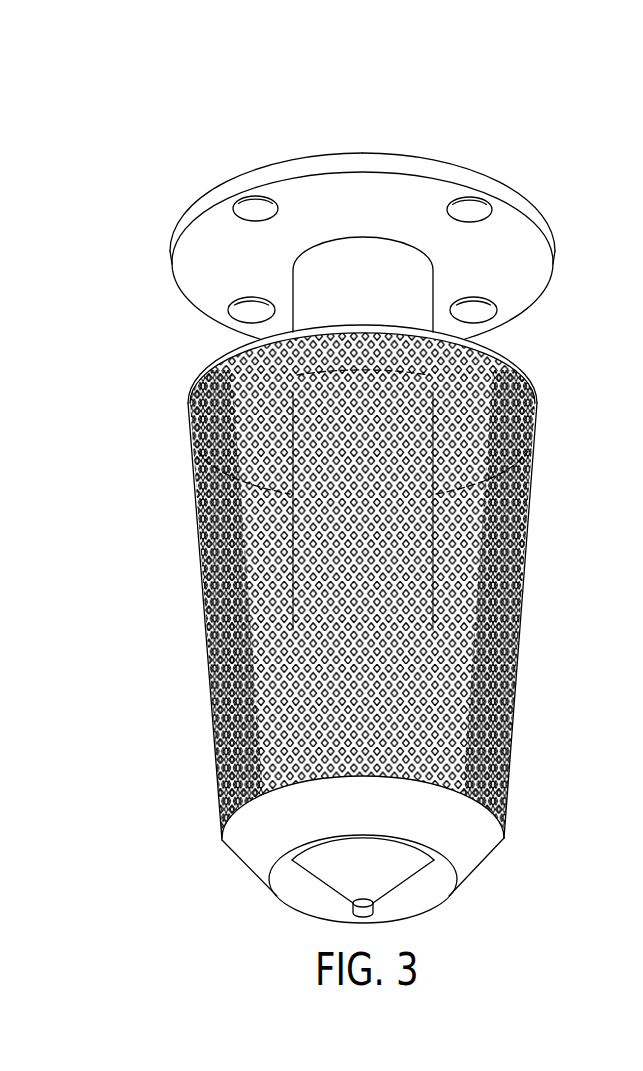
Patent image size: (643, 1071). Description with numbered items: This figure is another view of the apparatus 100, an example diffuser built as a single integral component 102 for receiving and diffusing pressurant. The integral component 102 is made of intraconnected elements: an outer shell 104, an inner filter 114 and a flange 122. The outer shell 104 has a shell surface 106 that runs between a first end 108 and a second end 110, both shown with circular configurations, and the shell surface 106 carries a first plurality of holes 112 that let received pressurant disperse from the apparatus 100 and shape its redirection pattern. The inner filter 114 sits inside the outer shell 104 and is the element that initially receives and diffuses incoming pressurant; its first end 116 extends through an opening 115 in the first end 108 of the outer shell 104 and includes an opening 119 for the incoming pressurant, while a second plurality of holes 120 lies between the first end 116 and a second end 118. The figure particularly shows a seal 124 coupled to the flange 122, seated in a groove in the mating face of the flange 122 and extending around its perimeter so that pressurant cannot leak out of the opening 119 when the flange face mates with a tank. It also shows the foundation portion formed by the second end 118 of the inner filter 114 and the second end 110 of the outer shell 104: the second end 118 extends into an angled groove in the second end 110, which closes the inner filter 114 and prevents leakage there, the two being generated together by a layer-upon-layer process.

The apparatus 100 is at (207, 157).
The integral component 102 is at (138, 395).
The outer shell 104 is at (190, 503).
The shell surface 106 is at (207, 600).
The first end 108 is at (522, 378).
The second end 110 is at (482, 880).
The first plurality of holes 112 is at (513, 533).
The inner filter 114 is at (437, 625).
The opening 115 is at (283, 380).
The first end 116 is at (398, 262).
The second end 118 is at (345, 873).
The opening 119 is at (408, 150).
The second plurality of holes 120 is at (422, 695).
The flange 122 is at (523, 188).
The seal 124 is at (168, 243).